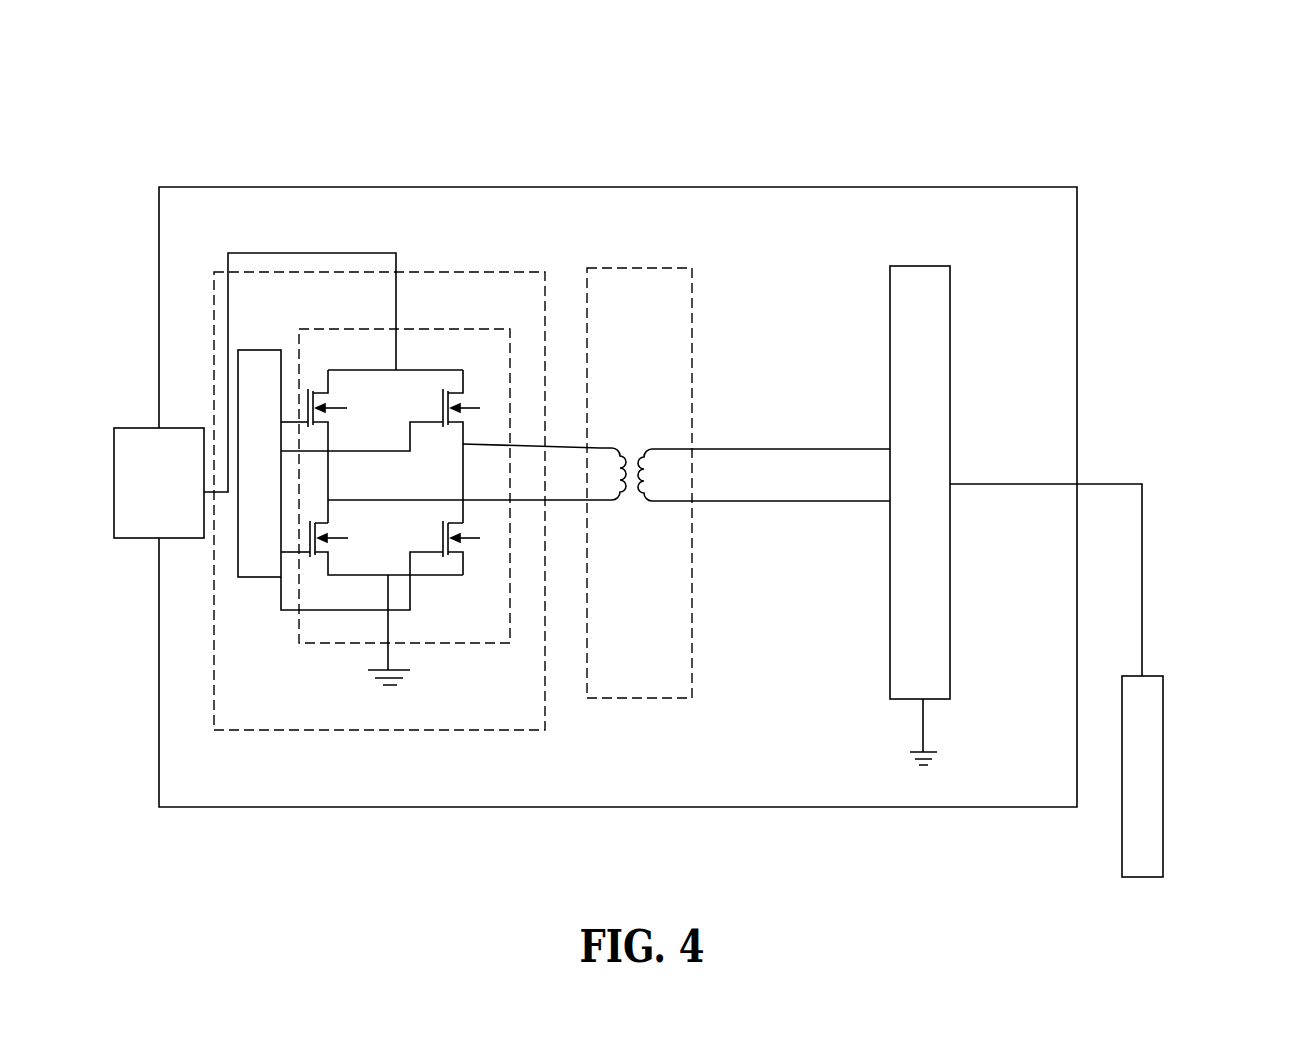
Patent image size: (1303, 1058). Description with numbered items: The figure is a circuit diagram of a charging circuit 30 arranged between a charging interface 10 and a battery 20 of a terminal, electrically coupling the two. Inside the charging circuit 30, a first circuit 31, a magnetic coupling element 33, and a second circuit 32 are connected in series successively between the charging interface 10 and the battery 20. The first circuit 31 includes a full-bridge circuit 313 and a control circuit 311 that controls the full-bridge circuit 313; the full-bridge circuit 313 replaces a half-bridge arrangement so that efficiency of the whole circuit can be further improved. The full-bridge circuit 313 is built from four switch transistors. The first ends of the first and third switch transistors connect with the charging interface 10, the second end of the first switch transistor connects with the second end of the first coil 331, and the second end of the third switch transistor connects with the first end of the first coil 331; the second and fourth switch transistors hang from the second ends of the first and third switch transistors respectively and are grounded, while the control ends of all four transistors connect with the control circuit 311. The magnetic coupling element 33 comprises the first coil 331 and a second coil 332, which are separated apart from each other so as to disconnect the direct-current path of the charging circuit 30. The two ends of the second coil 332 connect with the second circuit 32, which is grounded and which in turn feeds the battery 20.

The charging interface 10 is at (137, 428).
The battery 20 is at (1160, 676).
The charging circuit 30 is at (1042, 187).
The first circuit 31 is at (337, 270).
The second circuit 32 is at (918, 260).
The magnetic coupling element 33 is at (635, 268).
The control circuit 311 is at (263, 578).
The full-bridge circuit 313 is at (448, 644).
The first coil 331 is at (600, 448).
The second coil 332 is at (665, 448).